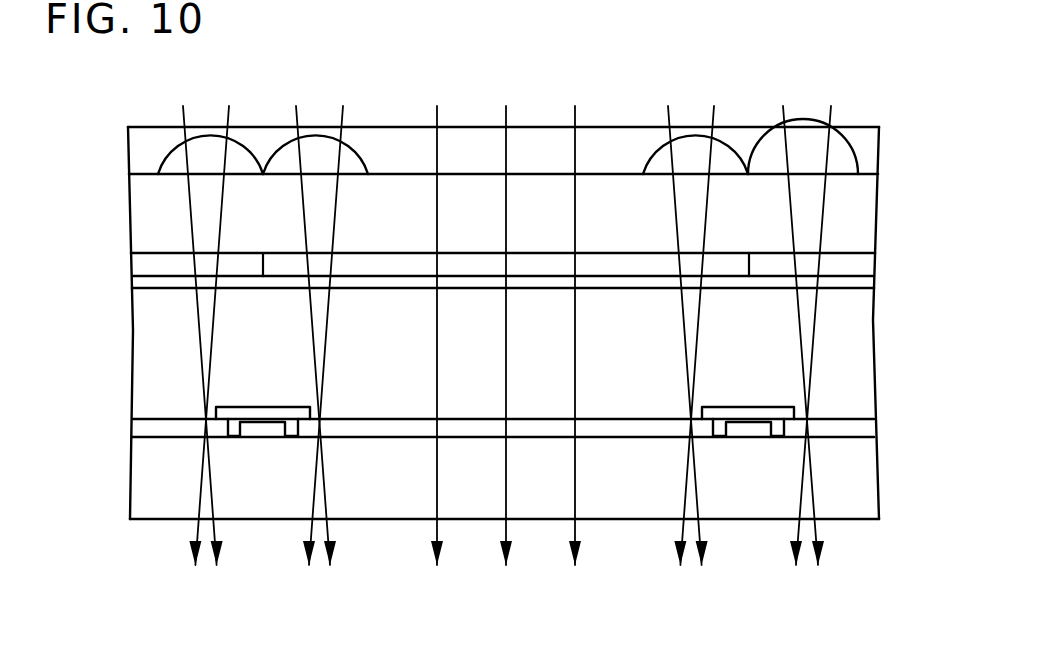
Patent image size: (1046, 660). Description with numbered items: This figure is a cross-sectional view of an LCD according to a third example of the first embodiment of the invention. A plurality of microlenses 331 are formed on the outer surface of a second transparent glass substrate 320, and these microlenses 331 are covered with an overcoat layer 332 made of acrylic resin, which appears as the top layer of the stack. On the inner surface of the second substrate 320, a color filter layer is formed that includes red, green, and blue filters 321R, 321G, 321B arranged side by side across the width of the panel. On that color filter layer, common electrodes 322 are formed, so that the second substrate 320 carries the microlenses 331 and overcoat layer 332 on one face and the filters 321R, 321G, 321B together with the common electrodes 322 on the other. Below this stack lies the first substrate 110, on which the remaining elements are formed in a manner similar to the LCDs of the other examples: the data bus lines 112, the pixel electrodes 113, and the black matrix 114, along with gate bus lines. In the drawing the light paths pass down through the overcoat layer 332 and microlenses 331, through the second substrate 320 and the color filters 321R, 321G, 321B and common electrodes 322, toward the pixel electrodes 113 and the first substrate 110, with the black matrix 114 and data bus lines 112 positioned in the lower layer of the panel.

The first substrate 110 is at (158, 497).
The data bus lines 112 is at (750, 430).
The pixel electrodes 113 is at (155, 428).
The black matrix 114 is at (252, 417).
The second transparent glass substrate 320 is at (158, 227).
The red filter 321R is at (157, 265).
The green filter 321G is at (404, 270).
The blue filter 321B is at (833, 263).
The common electrodes 322 is at (838, 285).
The microlenses 331 is at (664, 162).
The overcoat layer 332 is at (158, 135).